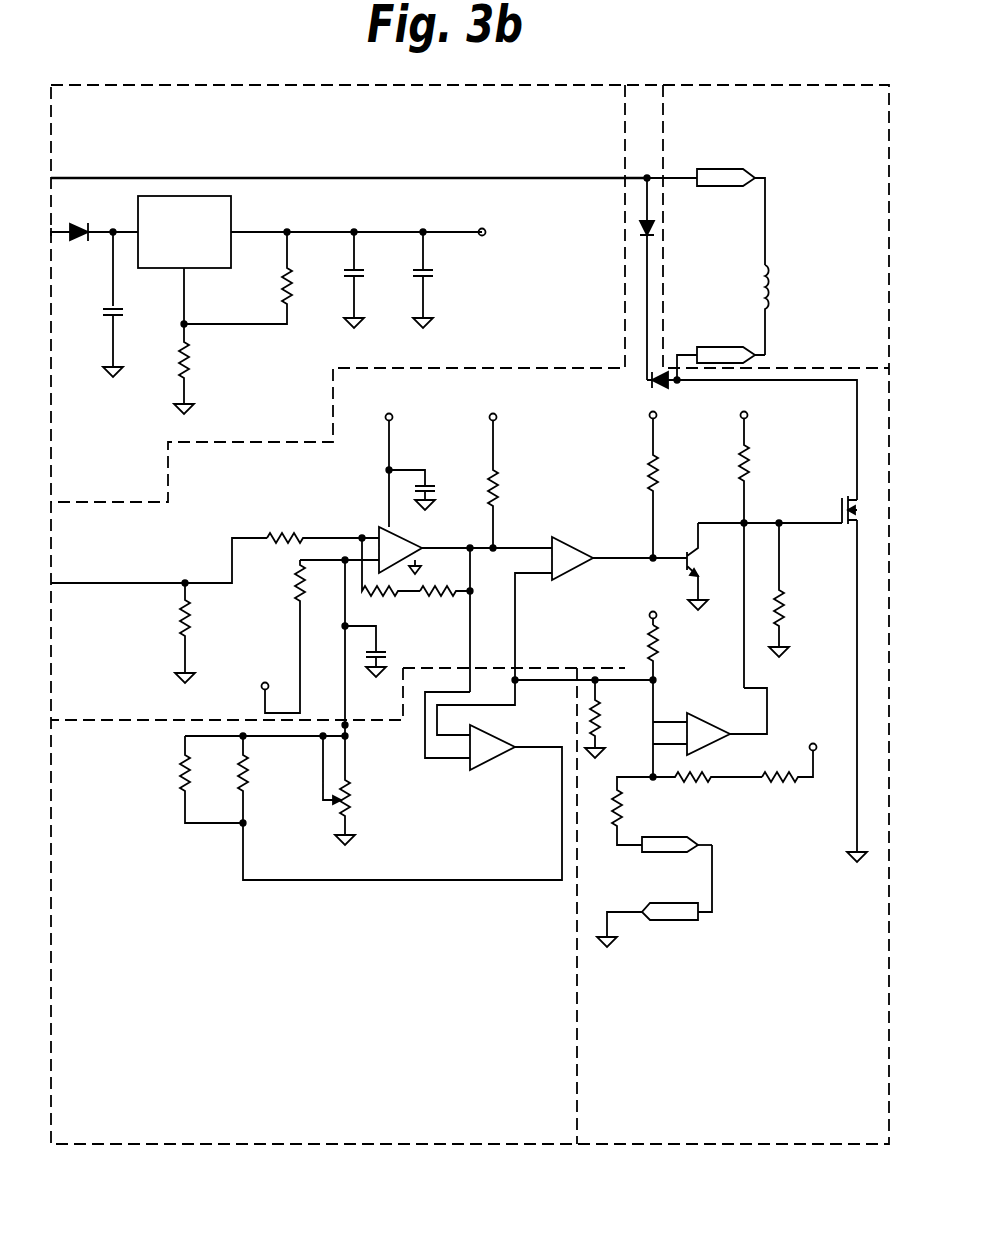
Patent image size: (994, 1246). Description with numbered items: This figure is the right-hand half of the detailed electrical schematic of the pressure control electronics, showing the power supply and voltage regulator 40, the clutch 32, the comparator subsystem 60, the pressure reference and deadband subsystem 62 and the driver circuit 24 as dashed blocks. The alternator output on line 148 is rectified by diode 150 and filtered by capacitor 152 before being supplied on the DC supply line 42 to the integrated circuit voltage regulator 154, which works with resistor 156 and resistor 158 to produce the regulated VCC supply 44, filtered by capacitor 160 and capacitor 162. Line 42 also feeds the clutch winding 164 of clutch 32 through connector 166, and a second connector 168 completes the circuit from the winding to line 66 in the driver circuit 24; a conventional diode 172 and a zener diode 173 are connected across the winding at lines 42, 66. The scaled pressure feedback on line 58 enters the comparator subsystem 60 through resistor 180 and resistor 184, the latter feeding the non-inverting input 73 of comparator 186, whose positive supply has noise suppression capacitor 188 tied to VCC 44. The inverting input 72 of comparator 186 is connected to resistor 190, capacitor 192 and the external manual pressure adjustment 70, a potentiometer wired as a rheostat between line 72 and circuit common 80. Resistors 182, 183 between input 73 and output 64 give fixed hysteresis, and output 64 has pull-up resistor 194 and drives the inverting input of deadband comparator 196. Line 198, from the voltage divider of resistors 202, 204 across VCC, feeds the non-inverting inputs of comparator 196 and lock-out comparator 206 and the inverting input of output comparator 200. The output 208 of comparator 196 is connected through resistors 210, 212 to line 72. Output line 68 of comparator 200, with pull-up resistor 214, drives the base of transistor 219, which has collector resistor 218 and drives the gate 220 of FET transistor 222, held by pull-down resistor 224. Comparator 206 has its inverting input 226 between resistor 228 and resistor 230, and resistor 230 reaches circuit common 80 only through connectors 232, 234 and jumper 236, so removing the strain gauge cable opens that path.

The driver circuit 24 is at (806, 918).
The clutch 32 is at (800, 348).
The power supply and voltage regulator 40 is at (500, 338).
The DC supply line 42 is at (531, 178).
The VCC supply 44 is at (445, 232).
The output line 58 is at (100, 586).
The comparator subsystem 60 is at (562, 478).
The pressure reference and deadband subsystem 62 is at (524, 992).
The output 64 is at (470, 618).
The line 66 is at (797, 382).
The output line 68 is at (618, 552).
The external manual pressure adjustment 70 is at (315, 818).
The inverting input 72 is at (350, 728).
The non-inverting input 73 is at (362, 536).
The circuit common 80 is at (110, 372).
The line 148 is at (76, 225).
The diode 150 is at (68, 242).
The capacitor 152 is at (120, 312).
The integrated circuit voltage regulator 154 is at (232, 206).
The resistor 156 is at (190, 368).
The resistor 158 is at (282, 286).
The capacitor 160 is at (358, 266).
The capacitor 162 is at (427, 266).
The clutch winding 164 is at (762, 292).
The connector 166 is at (720, 168).
The second connector 168 is at (733, 347).
The diode 172 is at (672, 388).
The zener diode 173 is at (644, 232).
The resistor 180 is at (178, 630).
The resistor 182 is at (388, 594).
The resistor 183 is at (426, 590).
The resistor 184 is at (280, 536).
The comparator 186 is at (418, 546).
The noise suppression capacitor 188 is at (425, 484).
The resistor 190 is at (297, 588).
The capacitor 192 is at (384, 655).
The pull-up resistor 194 is at (500, 492).
The deadband comparator 196 is at (508, 738).
The line 198 is at (440, 726).
The output comparator 200 is at (566, 573).
The resistor 202 is at (660, 668).
The resistor 204 is at (597, 712).
The lock-out comparator 206 is at (730, 715).
The output 208 is at (480, 878).
The resistor 210 is at (178, 784).
The resistor 212 is at (246, 788).
The pull-up resistor 214 is at (657, 478).
The collector resistor 218 is at (740, 460).
The transistor 219 is at (696, 554).
The gate 220 is at (800, 524).
The FET transistor 222 is at (838, 481).
The pull-down resistor 224 is at (785, 618).
The inverting input 226 is at (690, 779).
The resistor 228 is at (770, 786).
The resistor 230 is at (622, 806).
The connector 232 is at (645, 856).
The connector 234 is at (656, 910).
The jumper 236 is at (716, 876).